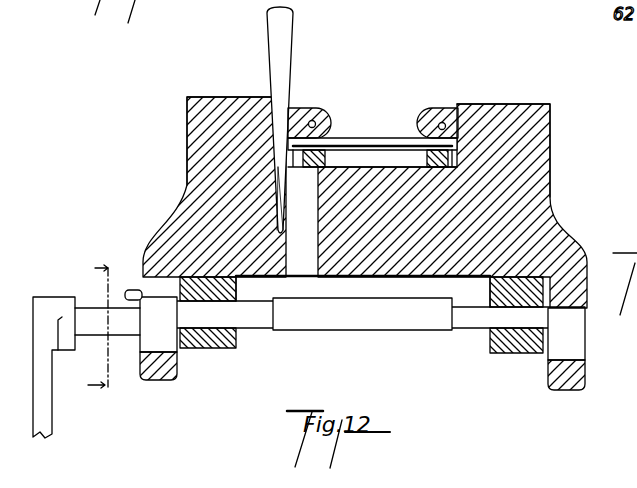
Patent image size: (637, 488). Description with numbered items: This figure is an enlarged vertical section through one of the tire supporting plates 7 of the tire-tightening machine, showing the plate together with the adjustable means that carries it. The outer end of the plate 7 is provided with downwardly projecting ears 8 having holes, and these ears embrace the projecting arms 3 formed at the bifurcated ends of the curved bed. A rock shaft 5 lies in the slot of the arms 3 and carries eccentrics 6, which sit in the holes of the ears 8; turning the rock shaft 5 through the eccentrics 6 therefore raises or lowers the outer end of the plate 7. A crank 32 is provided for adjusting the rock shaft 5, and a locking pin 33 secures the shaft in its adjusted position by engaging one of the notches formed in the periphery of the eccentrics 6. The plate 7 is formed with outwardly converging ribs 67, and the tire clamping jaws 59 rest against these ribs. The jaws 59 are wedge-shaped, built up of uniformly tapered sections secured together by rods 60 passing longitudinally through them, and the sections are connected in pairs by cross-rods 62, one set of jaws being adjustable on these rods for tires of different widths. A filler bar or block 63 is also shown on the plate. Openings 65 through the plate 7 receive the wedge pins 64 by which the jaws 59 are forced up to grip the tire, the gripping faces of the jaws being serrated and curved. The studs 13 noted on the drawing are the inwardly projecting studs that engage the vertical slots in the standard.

The projecting arms 3 is at (361, 328).
The rock shafts 5 is at (447, 327).
The eccentrics 6 is at (146, 345).
The tire supporting plates 7 is at (548, 178).
The ears 8 is at (177, 371).
The studs 13 is at (105, 330).
The cranks 32 is at (34, 352).
The locking pins 33 is at (108, 302).
The tire clamping jaws 59 is at (328, 119).
The rods 60 is at (316, 110).
The cross-rods 62 is at (387, 143).
The filler bar or block 63 is at (291, 107).
The wedge pins 64 is at (273, 42).
The openings 65 is at (302, 261).
The outwardly converging ribs 67 is at (201, 97).